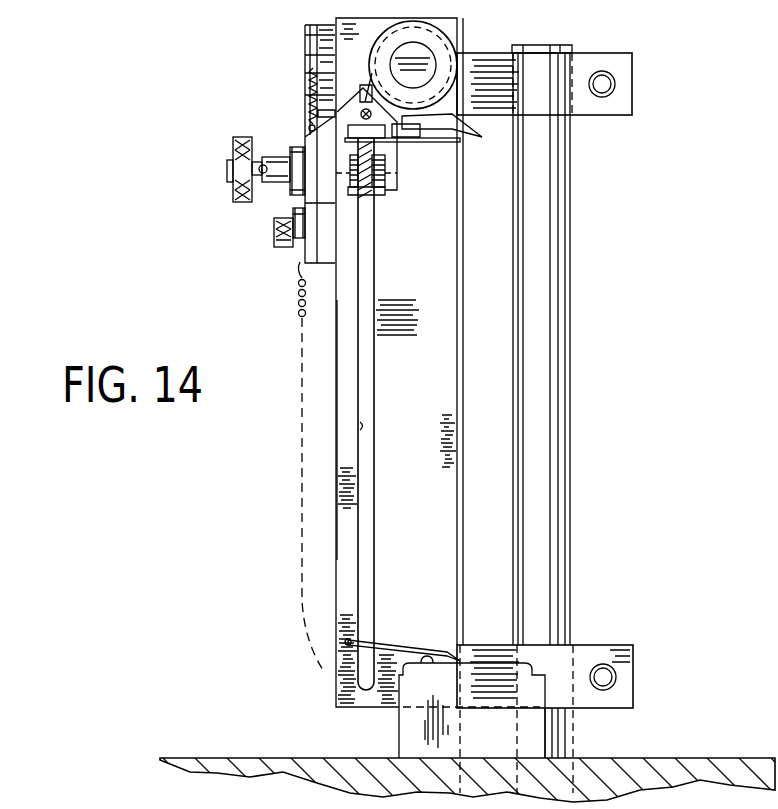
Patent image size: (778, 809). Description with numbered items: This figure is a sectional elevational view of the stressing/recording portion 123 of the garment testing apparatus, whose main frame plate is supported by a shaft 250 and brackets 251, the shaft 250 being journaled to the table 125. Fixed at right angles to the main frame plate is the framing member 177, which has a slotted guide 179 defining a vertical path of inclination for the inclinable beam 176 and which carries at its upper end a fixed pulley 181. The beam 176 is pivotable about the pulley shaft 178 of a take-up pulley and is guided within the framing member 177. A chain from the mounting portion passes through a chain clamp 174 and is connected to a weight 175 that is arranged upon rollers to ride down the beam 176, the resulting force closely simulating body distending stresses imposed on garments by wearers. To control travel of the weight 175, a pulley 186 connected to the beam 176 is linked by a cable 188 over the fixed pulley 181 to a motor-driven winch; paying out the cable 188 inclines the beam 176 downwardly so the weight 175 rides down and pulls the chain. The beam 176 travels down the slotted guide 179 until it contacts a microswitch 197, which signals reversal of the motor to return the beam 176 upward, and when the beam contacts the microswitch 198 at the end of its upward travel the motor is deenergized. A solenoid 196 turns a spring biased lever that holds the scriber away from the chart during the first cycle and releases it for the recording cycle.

The stressing/recording portion 123 is at (195, 122).
The table 125 is at (253, 752).
The chain clamp 174 is at (283, 250).
The weight 175 is at (296, 296).
The inclinable beam 176 is at (360, 205).
The framing member 177 is at (345, 521).
The pulley shaft 178 is at (216, 175).
The slotted guide 179 is at (360, 426).
The fixed pulley 181 is at (452, 35).
The pulley 186 is at (380, 197).
The cable 188 is at (457, 370).
The solenoid 196 is at (315, 98).
The microswitch 197 is at (390, 642).
The microswitch 198 is at (413, 145).
The shaft 250 is at (550, 356).
The brackets 251 is at (640, 90).